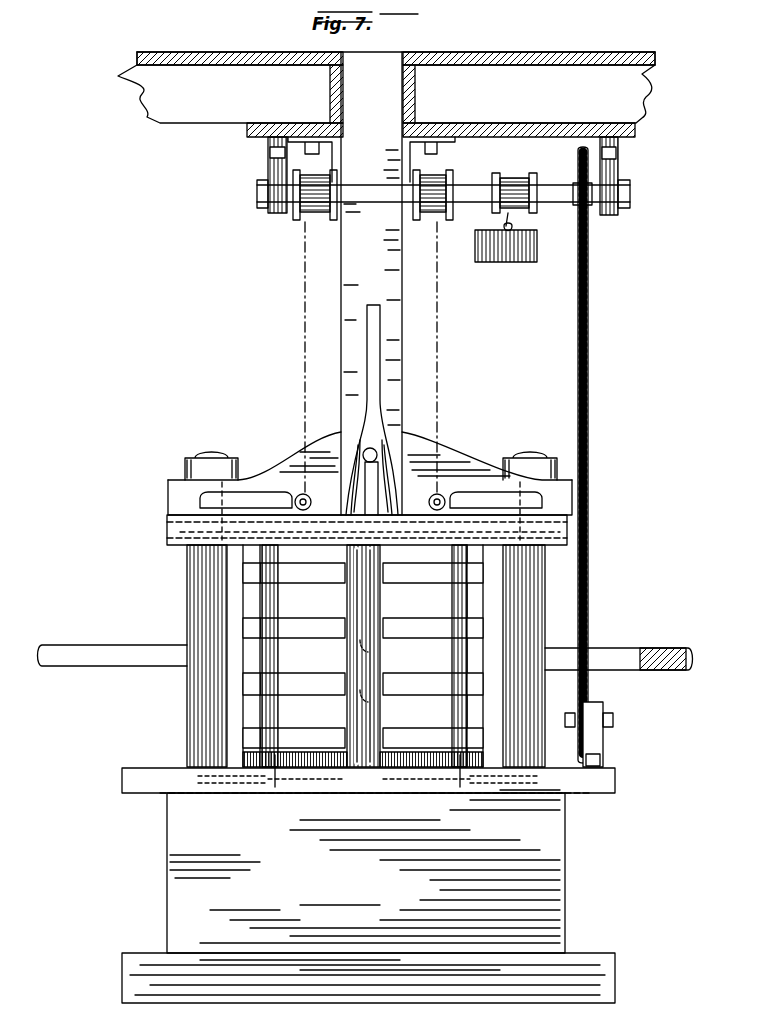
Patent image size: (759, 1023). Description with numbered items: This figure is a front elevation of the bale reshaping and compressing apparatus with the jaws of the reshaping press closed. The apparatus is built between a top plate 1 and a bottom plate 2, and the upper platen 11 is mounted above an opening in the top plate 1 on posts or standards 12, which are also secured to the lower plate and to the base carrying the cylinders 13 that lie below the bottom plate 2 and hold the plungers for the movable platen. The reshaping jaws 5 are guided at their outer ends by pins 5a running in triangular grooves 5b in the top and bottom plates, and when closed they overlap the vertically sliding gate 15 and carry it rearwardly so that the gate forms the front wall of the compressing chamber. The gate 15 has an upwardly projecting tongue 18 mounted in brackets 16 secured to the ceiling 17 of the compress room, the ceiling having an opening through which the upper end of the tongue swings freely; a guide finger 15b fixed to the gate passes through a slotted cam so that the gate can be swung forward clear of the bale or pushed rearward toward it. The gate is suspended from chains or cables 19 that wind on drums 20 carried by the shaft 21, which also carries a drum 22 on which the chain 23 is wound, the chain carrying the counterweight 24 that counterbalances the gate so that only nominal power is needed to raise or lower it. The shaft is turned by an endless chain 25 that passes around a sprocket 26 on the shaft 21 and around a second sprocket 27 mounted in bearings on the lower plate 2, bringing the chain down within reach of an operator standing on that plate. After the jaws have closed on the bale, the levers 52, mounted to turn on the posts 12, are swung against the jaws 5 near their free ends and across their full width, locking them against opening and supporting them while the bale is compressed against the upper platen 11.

The top plate 1 is at (572, 538).
The bottom plate 2 is at (150, 792).
The reshaping jaws 5 is at (363, 656).
The pins 5a is at (278, 788).
The triangular grooves 5b is at (233, 787).
The upper platen 11 is at (452, 478).
The posts or standards 12 is at (182, 492).
The cylinders 13 is at (366, 871).
The vertically sliding gate 15 is at (296, 599).
The guide finger 15b is at (376, 478).
The brackets 16 is at (410, 152).
The ceiling 17 is at (443, 134).
The tongue 18 is at (371, 283).
The chains or cables 19 is at (305, 353).
The drums 20 is at (303, 216).
The shaft 21 is at (443, 189).
The drum 22 is at (514, 183).
The chain 23 is at (530, 212).
The weight 24 is at (506, 256).
The endless chain 25 is at (596, 455).
The sprocket 26 is at (572, 182).
The sprocket 27 is at (604, 751).
The levers 52 is at (548, 620).